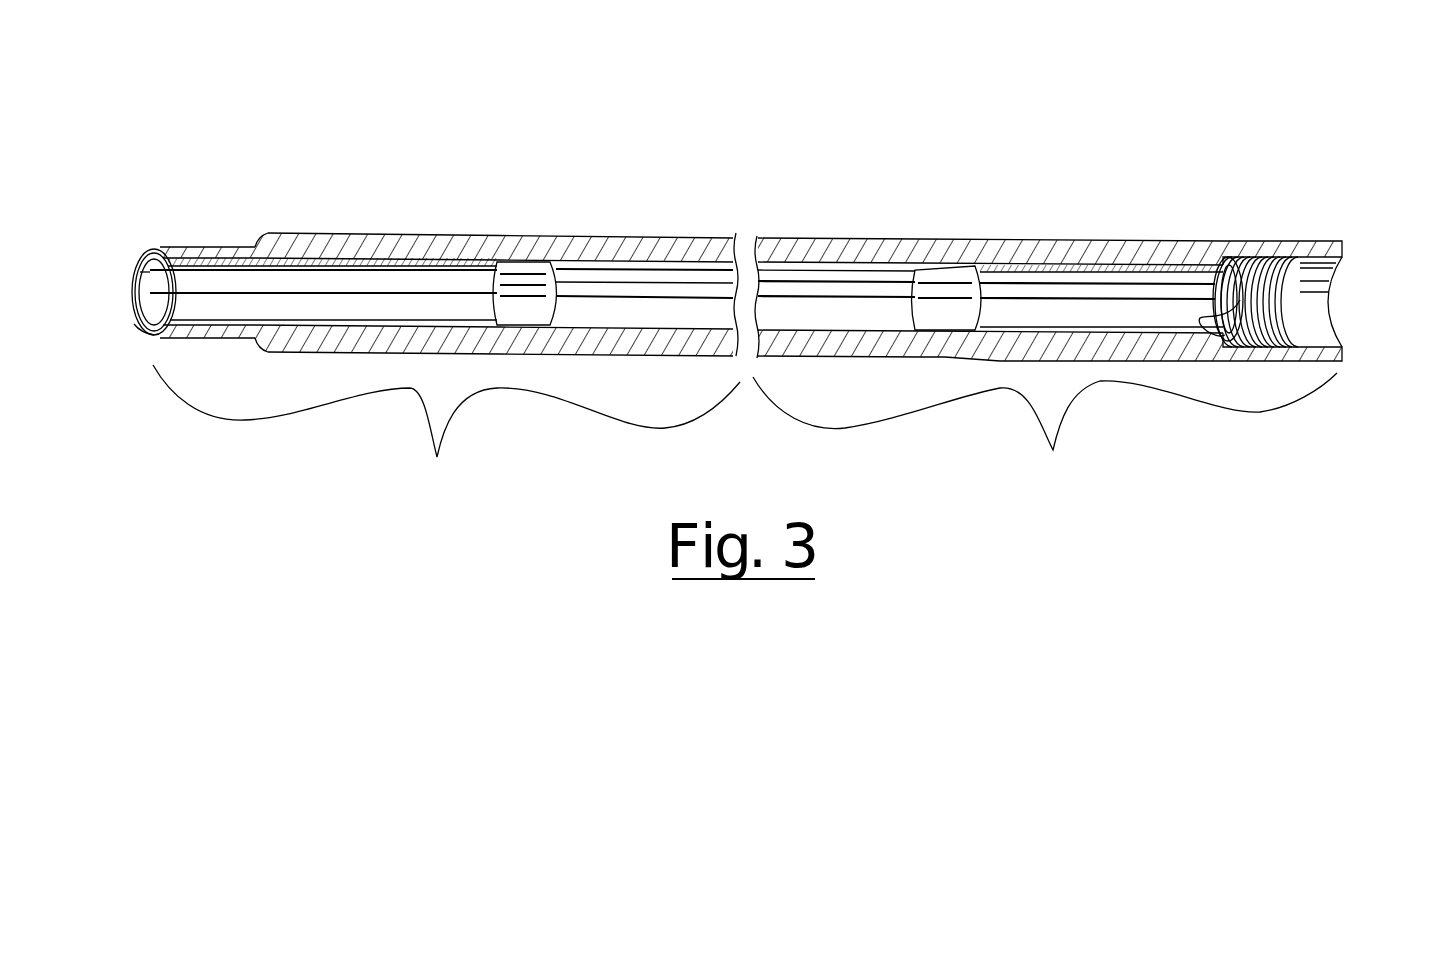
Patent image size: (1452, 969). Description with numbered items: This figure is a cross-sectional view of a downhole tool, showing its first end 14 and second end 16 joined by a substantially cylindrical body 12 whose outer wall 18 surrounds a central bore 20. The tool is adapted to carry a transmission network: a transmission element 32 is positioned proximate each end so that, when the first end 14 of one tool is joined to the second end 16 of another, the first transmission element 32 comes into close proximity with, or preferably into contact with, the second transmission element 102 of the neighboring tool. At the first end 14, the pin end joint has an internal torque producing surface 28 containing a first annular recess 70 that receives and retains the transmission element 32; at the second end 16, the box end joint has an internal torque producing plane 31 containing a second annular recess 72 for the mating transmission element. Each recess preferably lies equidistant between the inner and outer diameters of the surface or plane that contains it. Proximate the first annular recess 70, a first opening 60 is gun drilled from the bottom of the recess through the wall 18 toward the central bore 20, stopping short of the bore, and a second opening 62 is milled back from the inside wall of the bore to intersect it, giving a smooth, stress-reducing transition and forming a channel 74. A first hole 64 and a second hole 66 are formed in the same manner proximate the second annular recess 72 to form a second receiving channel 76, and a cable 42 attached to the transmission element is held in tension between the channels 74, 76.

The body 12 is at (787, 243).
The first end 14 is at (446, 433).
The second end 16 is at (1045, 432).
The outer wall 18 is at (1312, 253).
The central bore 20 is at (528, 300).
The internal torque producing surface 28 is at (143, 263).
The internal torque producing plane 31 is at (1222, 257).
The transmission element 32 is at (1240, 294).
The cable 42 is at (657, 260).
The first opening 60 is at (193, 247).
The second opening 62 is at (520, 257).
The first hole 64 is at (960, 263).
The second hole 66 is at (1182, 243).
The first annular recess 70 is at (145, 333).
The second annular recess 72 is at (1210, 310).
The channel 74 is at (307, 233).
The second receiving channel 76 is at (1097, 263).
The second transmission element 102 is at (133, 275).